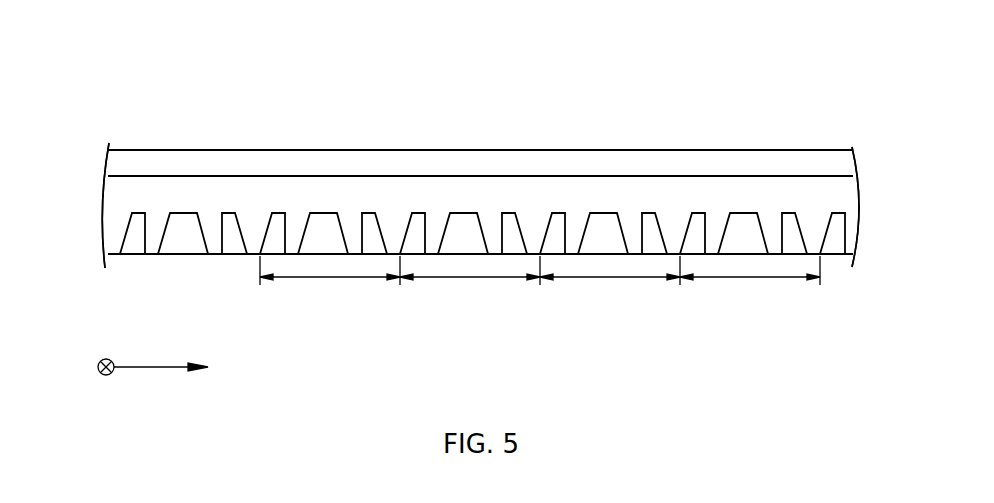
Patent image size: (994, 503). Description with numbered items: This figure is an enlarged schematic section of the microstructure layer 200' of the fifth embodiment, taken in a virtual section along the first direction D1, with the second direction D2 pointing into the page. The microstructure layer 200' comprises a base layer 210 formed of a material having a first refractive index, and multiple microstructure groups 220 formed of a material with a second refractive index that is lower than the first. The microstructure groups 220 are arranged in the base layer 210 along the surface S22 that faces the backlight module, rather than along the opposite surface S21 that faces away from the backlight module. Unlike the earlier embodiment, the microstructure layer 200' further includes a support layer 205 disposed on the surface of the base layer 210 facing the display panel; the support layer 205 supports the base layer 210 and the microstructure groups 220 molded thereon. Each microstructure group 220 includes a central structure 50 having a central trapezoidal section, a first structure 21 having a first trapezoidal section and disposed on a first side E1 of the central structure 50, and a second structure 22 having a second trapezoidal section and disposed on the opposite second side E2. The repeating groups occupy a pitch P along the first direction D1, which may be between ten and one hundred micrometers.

The microstructure layer 200' is at (455, 144).
The support layer 205 is at (187, 165).
The base layer 210 is at (132, 187).
The microstructure groups 220 is at (533, 71).
The first structure 21 is at (417, 217).
The central structure 50 is at (465, 218).
The second structure 22 is at (513, 218).
The surface facing away from the backlight module S21 is at (836, 172).
The surface facing the backlight module S22 is at (837, 262).
The first side E1 is at (78, 205).
The second side E2 is at (881, 207).
The pitch P is at (540, 283).
The first direction D1 is at (161, 382).
The second direction D2 is at (107, 354).